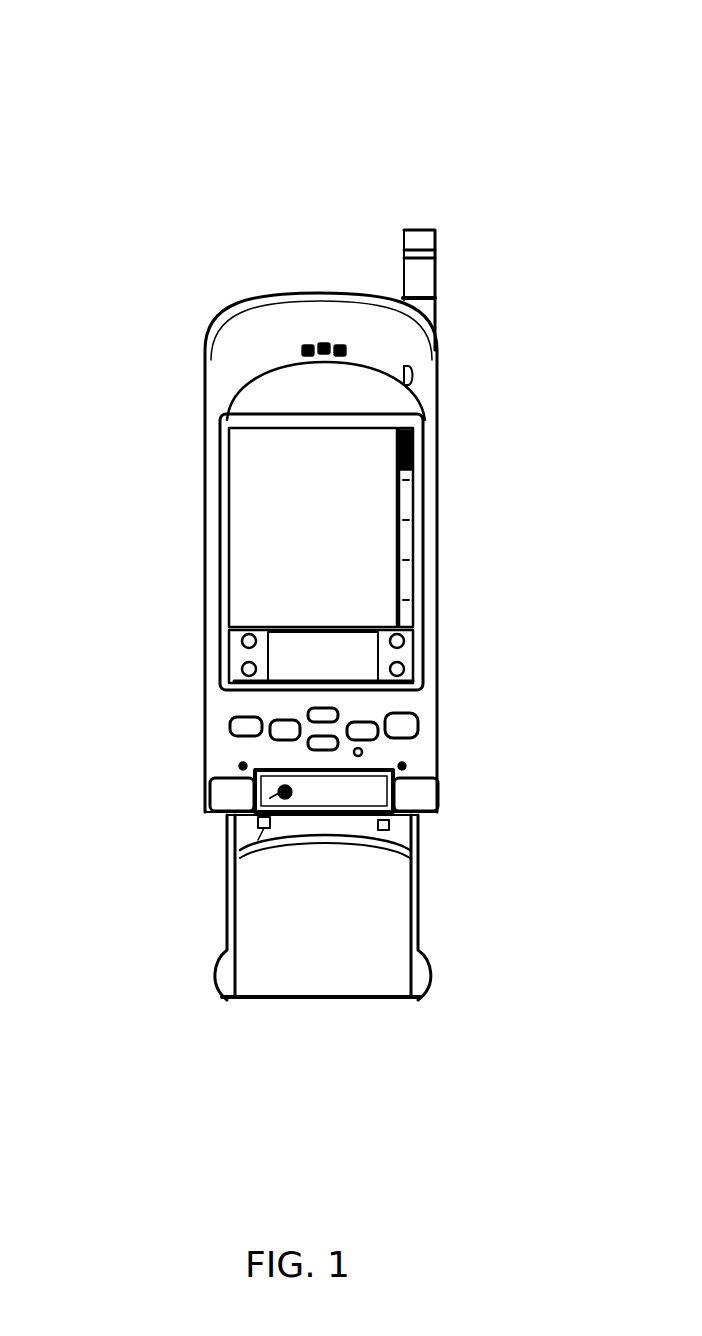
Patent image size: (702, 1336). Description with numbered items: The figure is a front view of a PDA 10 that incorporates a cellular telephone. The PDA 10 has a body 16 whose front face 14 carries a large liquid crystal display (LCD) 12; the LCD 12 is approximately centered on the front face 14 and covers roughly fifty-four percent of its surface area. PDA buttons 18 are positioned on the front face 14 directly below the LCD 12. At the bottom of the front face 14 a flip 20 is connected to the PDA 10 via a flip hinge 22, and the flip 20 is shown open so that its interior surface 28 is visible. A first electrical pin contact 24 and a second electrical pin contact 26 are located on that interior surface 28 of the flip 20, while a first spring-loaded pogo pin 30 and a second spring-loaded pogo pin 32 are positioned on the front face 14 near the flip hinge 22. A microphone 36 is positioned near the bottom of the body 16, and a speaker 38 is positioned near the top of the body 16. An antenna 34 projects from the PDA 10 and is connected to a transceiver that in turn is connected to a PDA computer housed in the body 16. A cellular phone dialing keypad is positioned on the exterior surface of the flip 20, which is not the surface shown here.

The PDA 10 is at (279, 112).
The liquid crystal display 12 is at (375, 478).
The front face 14 is at (427, 545).
The body 16 is at (181, 463).
The PDA buttons 18 is at (426, 712).
The flip 20 is at (436, 910).
The flip hinge 22 is at (438, 793).
The first electrical pin contact 24 is at (265, 843).
The second electrical pin contact 26 is at (420, 835).
The interior surface 28 is at (288, 972).
The first spring-loaded pogo pin 30 is at (238, 760).
The second spring-loaded pogo pin 32 is at (410, 762).
The antenna 34 is at (428, 268).
The microphone 36 is at (245, 815).
The speaker 38 is at (325, 348).